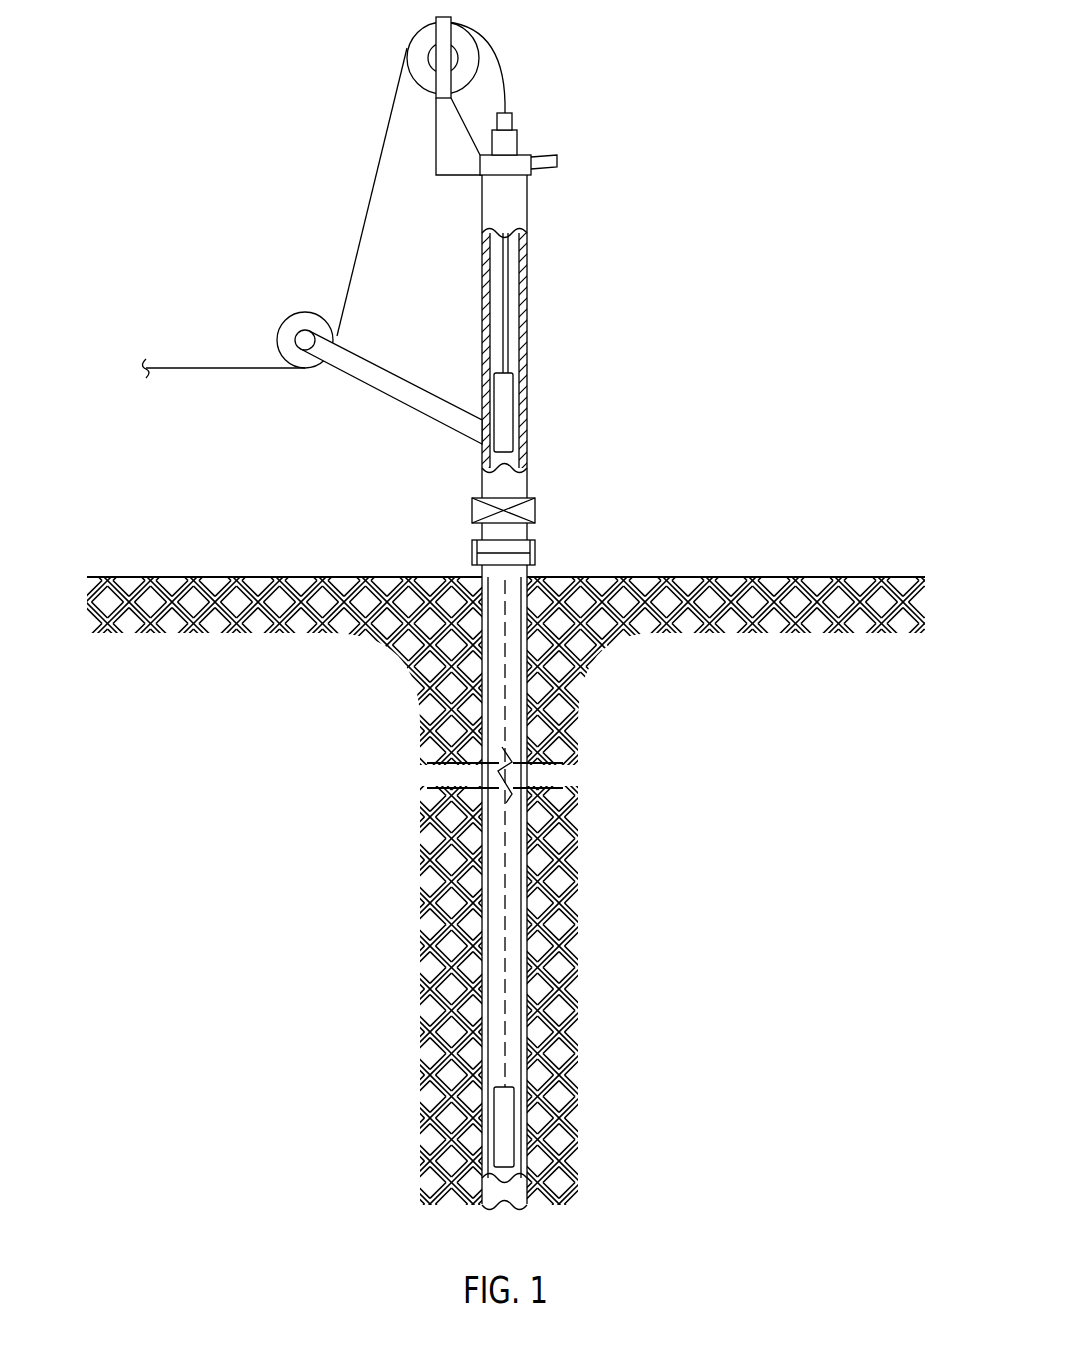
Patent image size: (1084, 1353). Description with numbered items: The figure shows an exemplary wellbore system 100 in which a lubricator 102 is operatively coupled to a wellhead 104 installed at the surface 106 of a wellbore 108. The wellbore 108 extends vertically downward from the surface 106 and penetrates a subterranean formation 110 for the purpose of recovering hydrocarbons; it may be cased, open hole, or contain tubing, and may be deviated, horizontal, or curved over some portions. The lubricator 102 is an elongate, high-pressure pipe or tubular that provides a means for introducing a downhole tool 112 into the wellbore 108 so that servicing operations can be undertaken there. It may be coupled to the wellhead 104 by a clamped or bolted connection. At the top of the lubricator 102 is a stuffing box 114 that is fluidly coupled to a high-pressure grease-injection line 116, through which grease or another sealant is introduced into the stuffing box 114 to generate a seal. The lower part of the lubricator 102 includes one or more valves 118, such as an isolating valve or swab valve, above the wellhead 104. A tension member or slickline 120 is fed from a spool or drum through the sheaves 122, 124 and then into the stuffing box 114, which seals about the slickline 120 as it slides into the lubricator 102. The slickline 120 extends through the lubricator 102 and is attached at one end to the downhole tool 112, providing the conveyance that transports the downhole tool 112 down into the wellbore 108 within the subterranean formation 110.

The wellbore system 100 is at (680, 152).
The lubricator 102 is at (482, 295).
The wellhead 104 is at (531, 572).
The surface 106 is at (706, 576).
The wellbore 108 is at (497, 695).
The subterranean formation 110 is at (250, 737).
The downhole tool 112 is at (508, 408).
The stuffing box 114 is at (518, 141).
The high-pressure grease-injection line 116 is at (547, 170).
The valve 118 is at (556, 512).
The slickline 120 is at (500, 75).
The sheave 122 is at (305, 313).
The sheave 124 is at (423, 78).